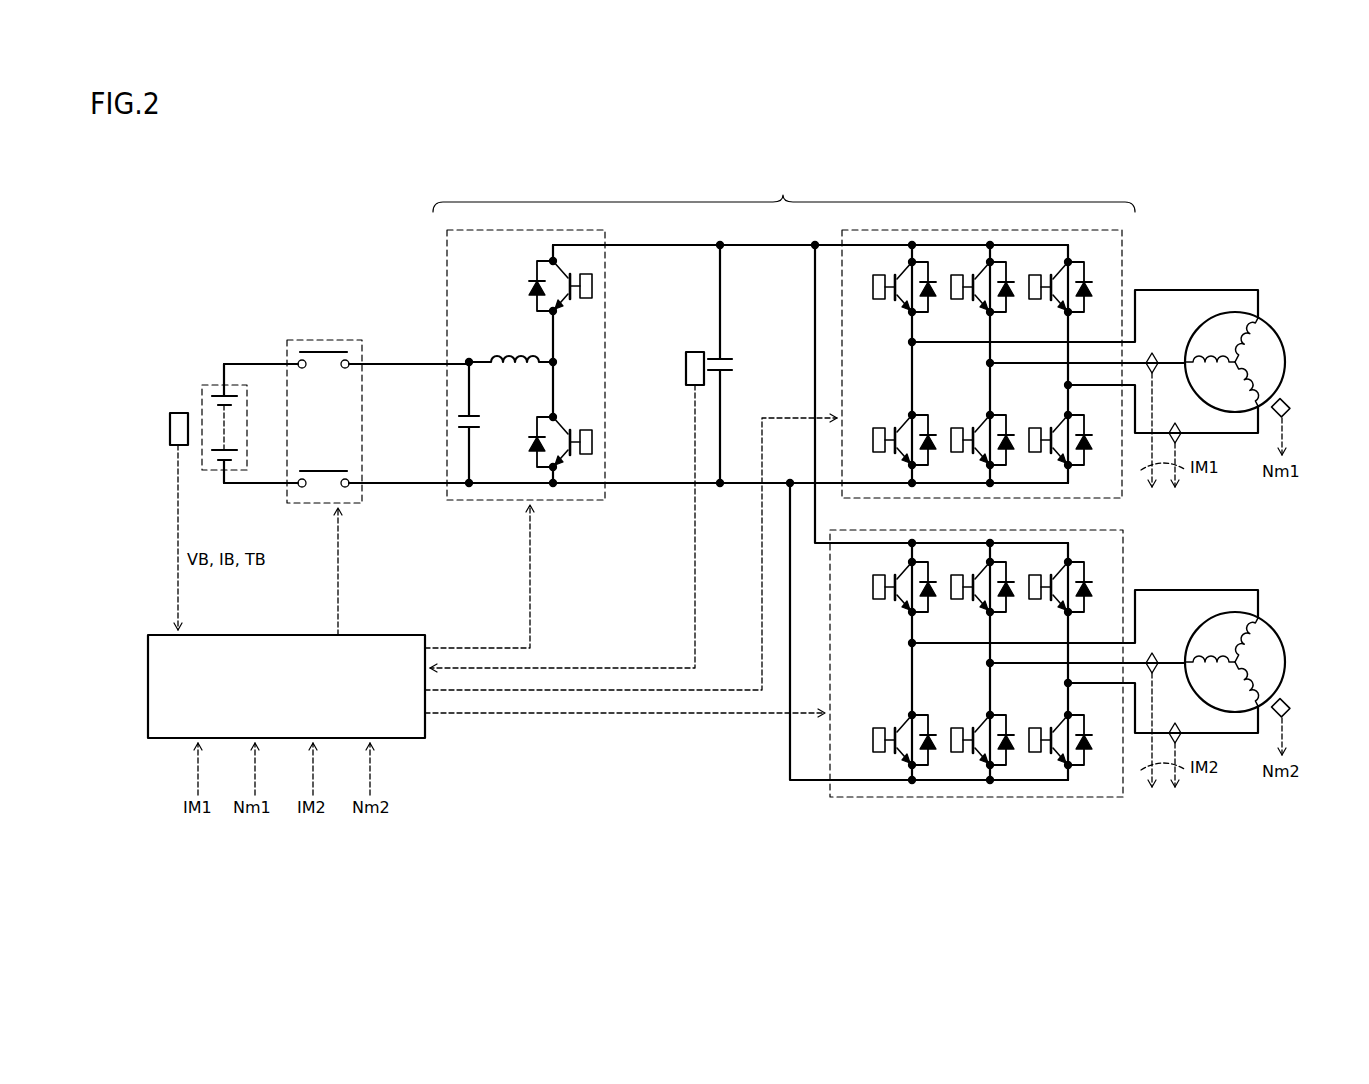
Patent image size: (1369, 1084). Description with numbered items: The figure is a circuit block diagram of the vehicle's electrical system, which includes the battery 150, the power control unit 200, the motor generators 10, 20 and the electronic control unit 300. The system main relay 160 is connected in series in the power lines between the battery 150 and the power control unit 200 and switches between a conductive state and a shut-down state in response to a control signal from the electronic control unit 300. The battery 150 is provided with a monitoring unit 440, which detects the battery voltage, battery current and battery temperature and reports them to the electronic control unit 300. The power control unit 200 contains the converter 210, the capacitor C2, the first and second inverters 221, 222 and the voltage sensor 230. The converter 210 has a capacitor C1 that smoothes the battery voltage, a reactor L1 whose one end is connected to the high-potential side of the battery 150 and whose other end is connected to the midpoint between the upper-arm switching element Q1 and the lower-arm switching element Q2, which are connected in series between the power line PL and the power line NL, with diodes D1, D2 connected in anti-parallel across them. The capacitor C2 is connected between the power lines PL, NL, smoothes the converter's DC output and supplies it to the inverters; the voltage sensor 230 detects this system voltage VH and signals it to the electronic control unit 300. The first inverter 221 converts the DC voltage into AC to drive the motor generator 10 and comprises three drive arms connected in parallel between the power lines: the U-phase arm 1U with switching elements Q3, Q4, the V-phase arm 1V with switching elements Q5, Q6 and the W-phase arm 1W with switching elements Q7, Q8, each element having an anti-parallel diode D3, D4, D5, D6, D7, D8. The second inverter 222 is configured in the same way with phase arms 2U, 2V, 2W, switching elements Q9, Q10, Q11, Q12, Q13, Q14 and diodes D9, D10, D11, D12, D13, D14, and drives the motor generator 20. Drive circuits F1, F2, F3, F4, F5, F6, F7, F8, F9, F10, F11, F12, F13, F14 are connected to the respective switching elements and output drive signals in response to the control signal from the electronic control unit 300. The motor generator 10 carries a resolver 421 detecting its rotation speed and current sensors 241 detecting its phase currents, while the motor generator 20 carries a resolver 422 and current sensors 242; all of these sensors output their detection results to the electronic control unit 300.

The motor generator 10 is at (1278, 327).
The motor generator 20 is at (1278, 627).
The battery 150 is at (214, 384).
The SMR 160 is at (339, 341).
The PCU 200 is at (784, 193).
The converter 210 is at (526, 354).
The inverter 221 is at (1050, 353).
The inverter 222 is at (1044, 652).
The voltage sensor 230 is at (695, 351).
The current sensors 241 is at (1150, 352).
The current sensors 242 is at (1150, 652).
The ECU 300 is at (372, 635).
The resolver 421 is at (1291, 412).
The resolver 422 is at (1291, 712).
The monitoring unit 440 is at (170, 415).
The reactor L1 is at (511, 375).
The capacitor C1 is at (483, 422).
The capacitor C2 is at (733, 364).
The power line PL is at (640, 250).
The power line NL is at (639, 479).
The system voltage VH is at (563, 444).
The switching element Q1 is at (570, 285).
The switching element Q2 is at (570, 438).
The switching element Q3 is at (890, 283).
The switching element Q4 is at (892, 437).
The switching element Q5 is at (968, 283).
The switching element Q6 is at (970, 437).
The switching element Q7 is at (1046, 283).
The switching element Q8 is at (1048, 437).
The switching element Q9 is at (890, 583).
The switching element Q10 is at (890, 737).
The switching element Q11 is at (967, 583).
The switching element Q12 is at (968, 737).
The switching element Q13 is at (1045, 583).
The switching element Q14 is at (1046, 737).
The diode D1 is at (529, 288).
The diode D2 is at (530, 445).
The diode D3 is at (931, 313).
The diode D4 is at (931, 465).
The diode D5 is at (1009, 313).
The diode D6 is at (1009, 465).
The diode D7 is at (1087, 300).
The diode D8 is at (1088, 465).
The diode D9 is at (931, 613).
The diode D10 is at (931, 765).
The diode D11 is at (1009, 613).
The diode D12 is at (1009, 765).
The diode D13 is at (1087, 600).
The diode D14 is at (1088, 765).
The drive circuit F1 is at (592, 300).
The drive circuit F2 is at (592, 456).
The drive circuit F3 is at (879, 300).
The drive circuit F4 is at (878, 428).
The drive circuit F5 is at (957, 300).
The drive circuit F6 is at (956, 428).
The drive circuit F7 is at (1035, 300).
The drive circuit F8 is at (1033, 428).
The drive circuit F9 is at (879, 600).
The drive circuit F10 is at (878, 728).
The drive circuit F11 is at (957, 600).
The drive circuit F12 is at (956, 728).
The drive circuit F13 is at (1035, 600).
The drive circuit F14 is at (1033, 728).
The U-phase arm 1U is at (900, 353).
The V-phase arm 1V is at (980, 377).
The W-phase arm 1W is at (1058, 393).
The U-phase arm 2U is at (900, 653).
The V-phase arm 2V is at (980, 677).
The W-phase arm 2W is at (1058, 693).